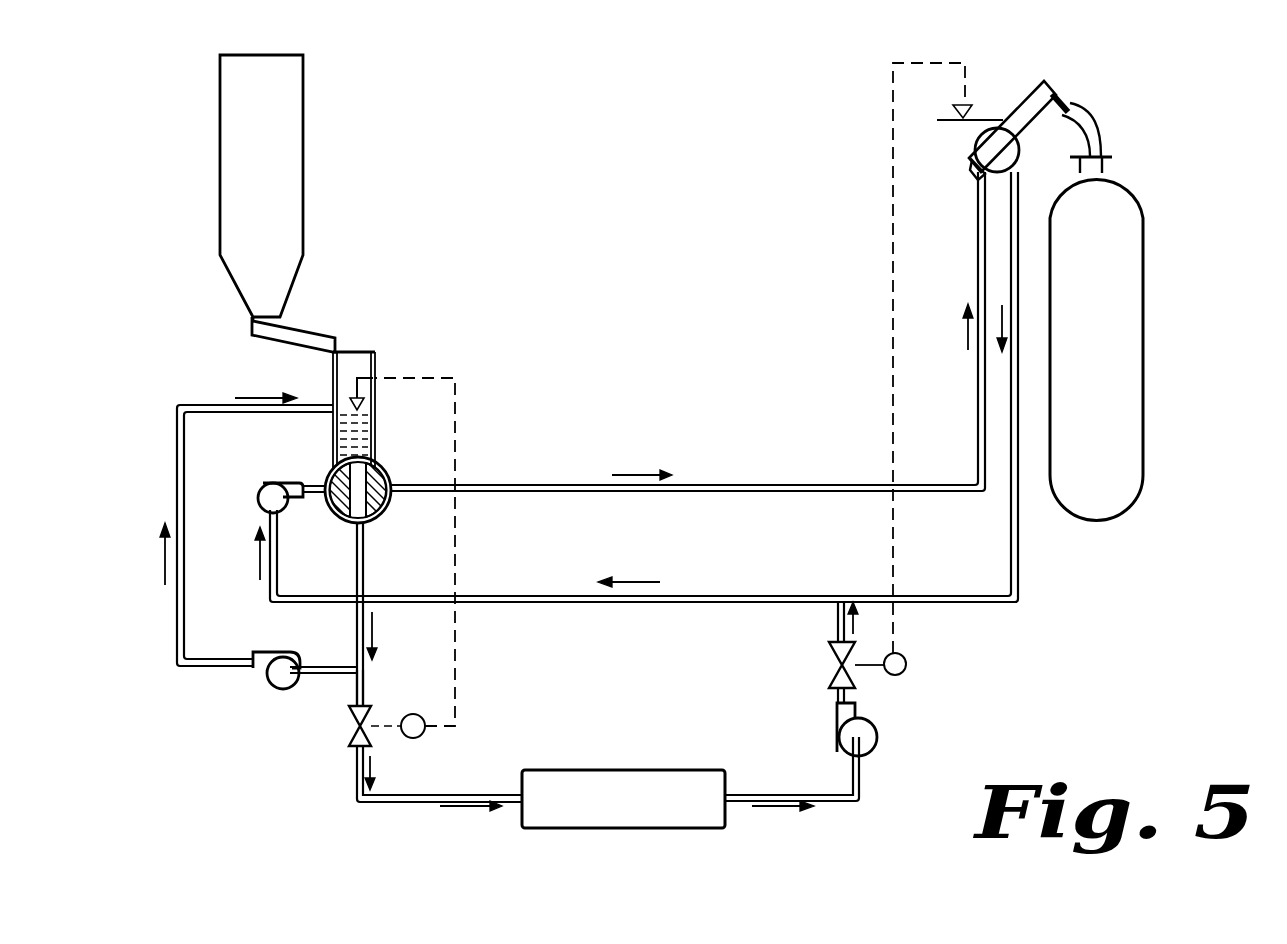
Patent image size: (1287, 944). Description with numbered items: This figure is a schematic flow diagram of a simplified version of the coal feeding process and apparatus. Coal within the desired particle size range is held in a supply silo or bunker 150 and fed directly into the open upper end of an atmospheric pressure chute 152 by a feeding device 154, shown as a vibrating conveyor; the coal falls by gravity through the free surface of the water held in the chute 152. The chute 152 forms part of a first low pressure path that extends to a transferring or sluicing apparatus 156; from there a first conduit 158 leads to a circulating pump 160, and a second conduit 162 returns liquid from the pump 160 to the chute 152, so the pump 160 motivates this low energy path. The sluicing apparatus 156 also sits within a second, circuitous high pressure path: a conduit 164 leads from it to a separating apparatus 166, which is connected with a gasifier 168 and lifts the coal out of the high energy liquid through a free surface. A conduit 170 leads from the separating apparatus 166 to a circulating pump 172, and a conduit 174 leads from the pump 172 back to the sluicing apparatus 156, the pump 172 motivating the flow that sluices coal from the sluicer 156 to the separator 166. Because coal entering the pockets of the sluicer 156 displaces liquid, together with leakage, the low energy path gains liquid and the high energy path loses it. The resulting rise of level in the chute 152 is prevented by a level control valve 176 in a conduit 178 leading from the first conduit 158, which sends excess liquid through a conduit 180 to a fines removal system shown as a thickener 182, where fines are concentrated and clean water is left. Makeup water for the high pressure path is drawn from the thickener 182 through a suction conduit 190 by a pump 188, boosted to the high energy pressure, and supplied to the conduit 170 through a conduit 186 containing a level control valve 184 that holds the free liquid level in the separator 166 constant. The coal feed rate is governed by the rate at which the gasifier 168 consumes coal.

The supply silo or bunker 150 is at (303, 150).
The chute 152 is at (375, 356).
The feeding device 154 is at (305, 337).
The transferring or sluicing apparatus 156 is at (388, 470).
The first conduit 158 is at (364, 558).
The circulating pump 160 is at (290, 684).
The second conduit 162 is at (177, 455).
The conduit 164 is at (535, 492).
The separating apparatus 166 is at (1048, 70).
The gasifier 168 is at (1143, 352).
The conduit 170 is at (782, 595).
The circulating pump 172 is at (263, 484).
The conduit 174 is at (320, 485).
The level control valve 176 is at (372, 728).
The conduit 178 is at (365, 697).
The conduit 180 is at (400, 803).
The thickener 182 is at (675, 770).
The level control valve 184 is at (829, 665).
The conduit 186 is at (838, 622).
The pump 188 is at (838, 727).
The suction conduit 190 is at (857, 800).